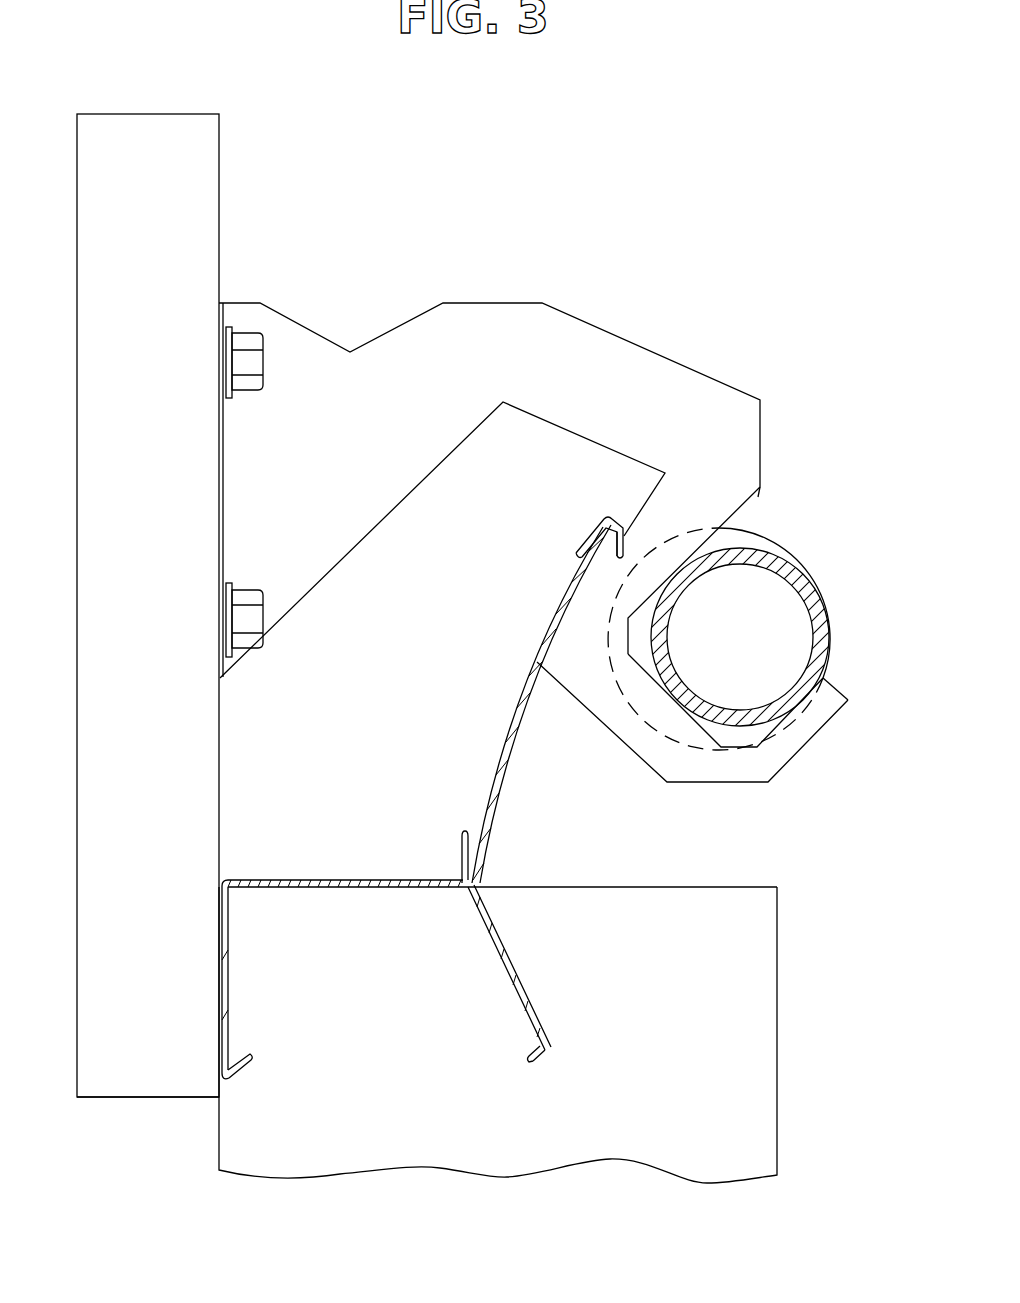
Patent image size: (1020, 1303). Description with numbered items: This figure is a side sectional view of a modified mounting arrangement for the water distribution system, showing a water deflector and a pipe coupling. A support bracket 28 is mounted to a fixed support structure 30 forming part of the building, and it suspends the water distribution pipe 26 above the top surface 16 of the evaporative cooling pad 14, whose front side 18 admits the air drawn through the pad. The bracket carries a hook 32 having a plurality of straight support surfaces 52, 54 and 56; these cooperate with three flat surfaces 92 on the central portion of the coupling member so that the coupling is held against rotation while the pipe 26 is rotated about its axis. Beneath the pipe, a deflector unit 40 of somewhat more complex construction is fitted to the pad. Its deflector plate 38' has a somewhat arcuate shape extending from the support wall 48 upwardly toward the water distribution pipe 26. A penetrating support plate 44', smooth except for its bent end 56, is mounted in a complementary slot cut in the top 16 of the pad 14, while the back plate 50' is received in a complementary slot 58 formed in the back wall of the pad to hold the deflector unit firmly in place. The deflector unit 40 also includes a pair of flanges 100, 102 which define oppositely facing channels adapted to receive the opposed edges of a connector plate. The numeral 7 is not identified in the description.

The fixed support structure 30 is at (206, 200).
The support bracket 28 is at (545, 330).
The straight support surface / bent end 56 is at (758, 497).
The water distribution pipe 26 is at (807, 583).
The flat surfaces 92 is at (820, 680).
The straight support surface 52 is at (843, 690).
The hook 32 is at (795, 755).
The straight support surface 54 is at (653, 673).
The flange 100 is at (585, 543).
The clip leg 7 is at (627, 543).
The deflector unit 40 is at (376, 802).
The deflector plate 38' is at (541, 704).
The flange 102 is at (460, 833).
The support wall 48 is at (253, 877).
The back plate 50' is at (184, 982).
The complementary slot 58 is at (250, 1060).
The penetrating support plate 44' is at (539, 967).
The top surface 16 is at (703, 882).
The evaporative cooling pad 14 is at (755, 1083).
The front side 18 is at (213, 1104).